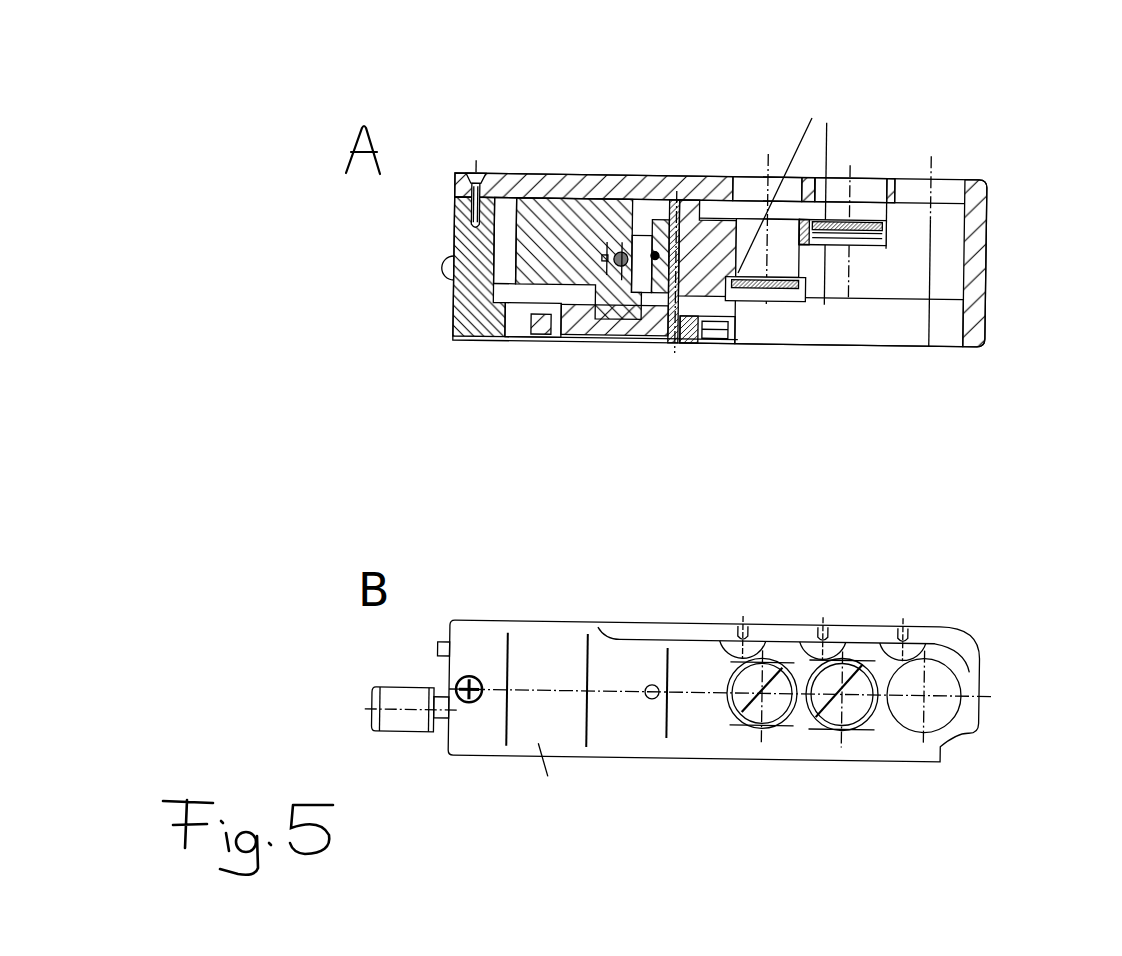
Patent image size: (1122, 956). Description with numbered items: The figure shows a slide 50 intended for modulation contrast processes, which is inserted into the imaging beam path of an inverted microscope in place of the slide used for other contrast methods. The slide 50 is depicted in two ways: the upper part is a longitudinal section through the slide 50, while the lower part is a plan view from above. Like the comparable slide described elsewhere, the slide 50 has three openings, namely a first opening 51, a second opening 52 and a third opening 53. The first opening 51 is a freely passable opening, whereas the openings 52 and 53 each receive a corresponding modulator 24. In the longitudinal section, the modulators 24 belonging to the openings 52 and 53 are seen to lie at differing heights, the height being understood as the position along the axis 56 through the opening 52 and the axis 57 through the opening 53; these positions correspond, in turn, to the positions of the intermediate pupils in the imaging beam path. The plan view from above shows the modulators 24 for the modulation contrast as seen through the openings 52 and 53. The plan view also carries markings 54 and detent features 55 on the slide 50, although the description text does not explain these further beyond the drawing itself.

The modulator 24 is at (855, 230).
The slide 50 is at (1000, 265).
The first opening 51 is at (934, 175).
The opening 52 is at (863, 165).
The opening 53 is at (780, 160).
The scale markings 54 is at (657, 672).
The detent notches 55 is at (904, 621).
The axis 56 is at (850, 190).
The axis 57 is at (762, 188).